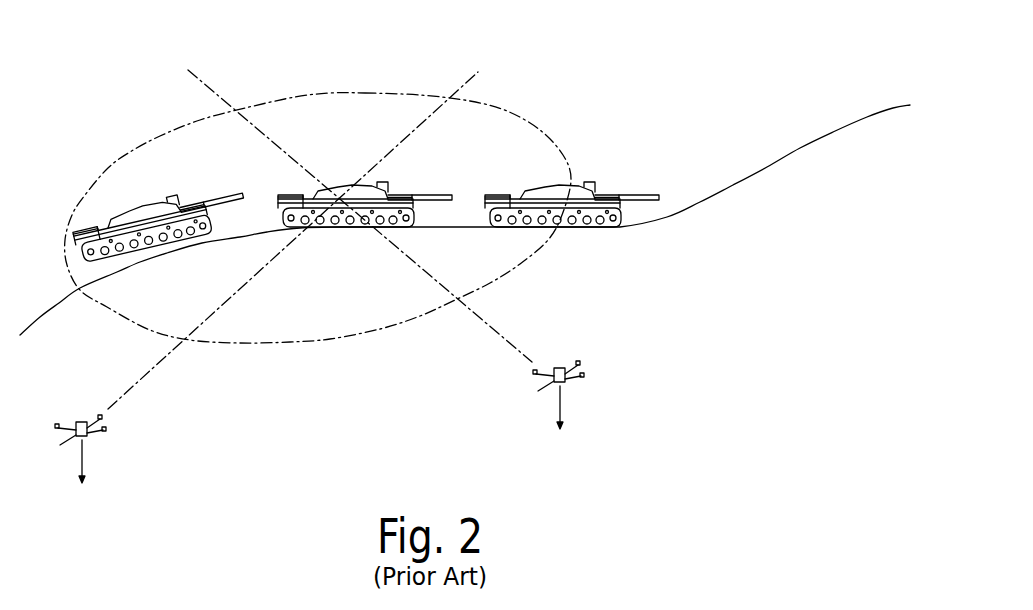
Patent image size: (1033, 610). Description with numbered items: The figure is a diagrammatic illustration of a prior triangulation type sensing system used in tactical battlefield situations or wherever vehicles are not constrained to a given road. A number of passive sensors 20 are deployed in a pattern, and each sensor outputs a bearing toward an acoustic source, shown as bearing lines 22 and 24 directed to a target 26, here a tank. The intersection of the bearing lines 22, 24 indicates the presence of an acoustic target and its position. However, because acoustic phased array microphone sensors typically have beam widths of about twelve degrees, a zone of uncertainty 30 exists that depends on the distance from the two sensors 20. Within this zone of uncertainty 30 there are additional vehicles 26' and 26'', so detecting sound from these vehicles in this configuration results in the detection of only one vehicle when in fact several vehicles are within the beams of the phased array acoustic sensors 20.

The passive sensors 20 is at (82, 421).
The bearing line 22 is at (250, 280).
The bearing line 24 is at (408, 258).
The target 26 is at (365, 182).
The vehicle 26' is at (158, 209).
The vehicle 26'' is at (572, 188).
The zone of uncertainty 30 is at (403, 62).